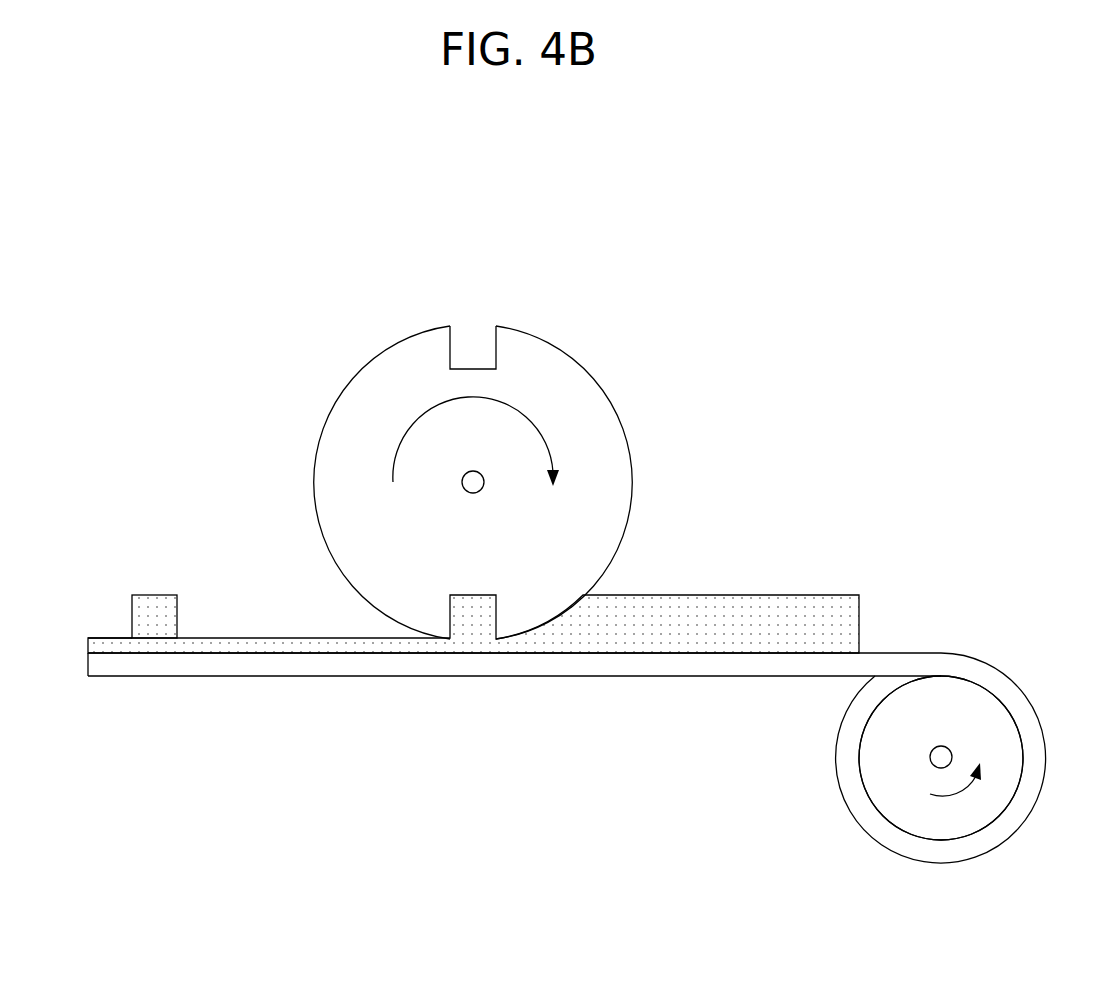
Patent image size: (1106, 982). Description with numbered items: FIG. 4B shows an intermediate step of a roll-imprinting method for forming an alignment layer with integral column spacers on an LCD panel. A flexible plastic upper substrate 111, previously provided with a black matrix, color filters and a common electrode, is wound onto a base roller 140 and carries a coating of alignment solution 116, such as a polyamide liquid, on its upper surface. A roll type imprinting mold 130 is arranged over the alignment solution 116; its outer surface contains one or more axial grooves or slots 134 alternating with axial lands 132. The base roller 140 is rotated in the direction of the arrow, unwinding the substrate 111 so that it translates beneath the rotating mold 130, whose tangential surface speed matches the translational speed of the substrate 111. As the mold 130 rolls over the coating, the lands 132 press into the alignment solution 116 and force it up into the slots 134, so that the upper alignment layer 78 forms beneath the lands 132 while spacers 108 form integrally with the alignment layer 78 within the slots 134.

The upper alignment layer 78 is at (112, 638).
The spacers 108 is at (153, 597).
The upper substrate 111 is at (432, 668).
The alignment solution 116 is at (855, 623).
The roll type imprinting mold 130 is at (527, 446).
The lands 132 is at (565, 366).
The axial grooves or slots 134 is at (480, 333).
The base roller 140 is at (941, 828).